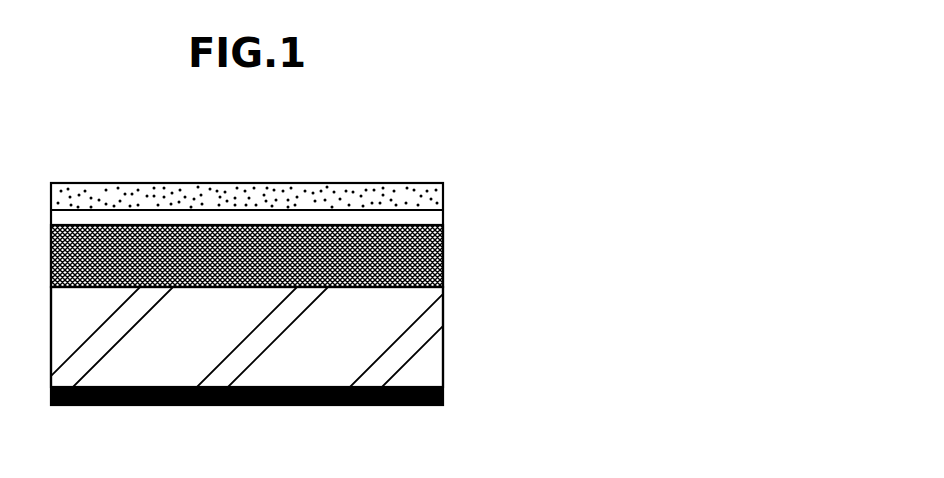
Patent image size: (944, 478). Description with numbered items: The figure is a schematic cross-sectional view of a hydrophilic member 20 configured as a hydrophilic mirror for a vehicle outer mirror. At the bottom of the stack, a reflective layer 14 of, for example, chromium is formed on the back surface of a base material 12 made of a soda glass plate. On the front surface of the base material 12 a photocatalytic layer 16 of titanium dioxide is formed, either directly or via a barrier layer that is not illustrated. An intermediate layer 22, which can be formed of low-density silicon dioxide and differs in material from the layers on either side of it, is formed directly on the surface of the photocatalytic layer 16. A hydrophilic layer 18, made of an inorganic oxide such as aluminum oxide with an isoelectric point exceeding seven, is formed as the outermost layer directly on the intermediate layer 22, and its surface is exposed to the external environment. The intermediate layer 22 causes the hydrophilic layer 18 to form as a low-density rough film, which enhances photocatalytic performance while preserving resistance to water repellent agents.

The hydrophilic member 20 is at (450, 132).
The hydrophilic layer 18 is at (427, 200).
The intermediate layer 22 is at (427, 218).
The photocatalytic layer 16 is at (427, 257).
The base material 12 is at (412, 339).
The reflective layer 14 is at (443, 397).